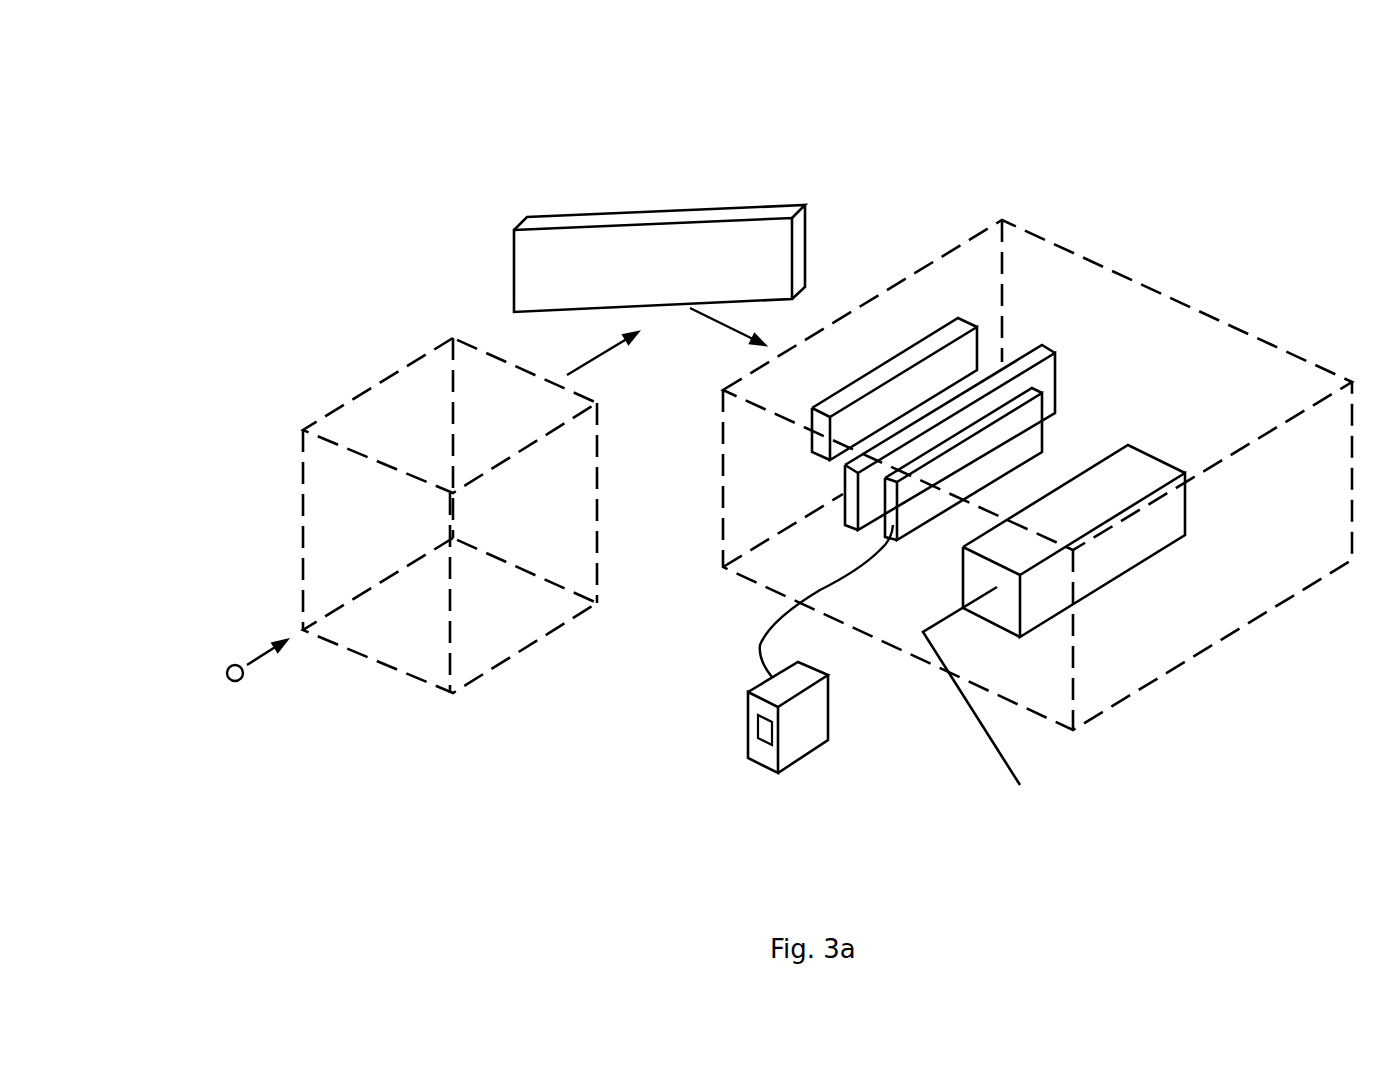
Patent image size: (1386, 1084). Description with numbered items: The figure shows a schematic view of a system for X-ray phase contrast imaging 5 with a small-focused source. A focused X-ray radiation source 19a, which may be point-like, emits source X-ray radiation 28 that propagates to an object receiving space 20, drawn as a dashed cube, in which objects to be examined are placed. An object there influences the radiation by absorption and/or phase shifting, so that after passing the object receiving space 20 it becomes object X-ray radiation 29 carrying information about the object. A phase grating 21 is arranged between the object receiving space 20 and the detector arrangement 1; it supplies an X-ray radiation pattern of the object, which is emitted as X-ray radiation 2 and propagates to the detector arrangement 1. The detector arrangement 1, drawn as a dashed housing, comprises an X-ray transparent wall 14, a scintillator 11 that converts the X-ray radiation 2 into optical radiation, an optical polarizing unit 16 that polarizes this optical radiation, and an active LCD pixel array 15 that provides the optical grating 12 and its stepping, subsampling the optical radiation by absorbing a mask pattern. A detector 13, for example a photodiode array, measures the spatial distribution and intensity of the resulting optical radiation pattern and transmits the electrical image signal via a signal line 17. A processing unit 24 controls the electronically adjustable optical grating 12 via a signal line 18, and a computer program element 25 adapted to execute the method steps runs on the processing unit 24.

The detector arrangement 1 is at (1250, 328).
The X-ray radiation 2 is at (712, 323).
The system for X-ray phase contrast imaging 5 is at (637, 120).
The scintillator 11 is at (930, 350).
The optical grating 12 is at (1028, 433).
The detector 13 is at (1147, 533).
The X-ray transparent wall 14 is at (955, 252).
The active LCD pixel array 15 is at (883, 522).
The optical polarizing unit 16 is at (1043, 343).
The signal line 17 is at (997, 742).
The signal line 18 is at (757, 647).
The focused X-ray radiation source 19a is at (245, 680).
The object receiving space 20 is at (368, 388).
The phase grating 21 is at (758, 214).
The processing unit 24 is at (797, 733).
The computer program element 25 is at (763, 735).
The source X-ray radiation 28 is at (263, 650).
The object X-ray radiation 29 is at (600, 358).